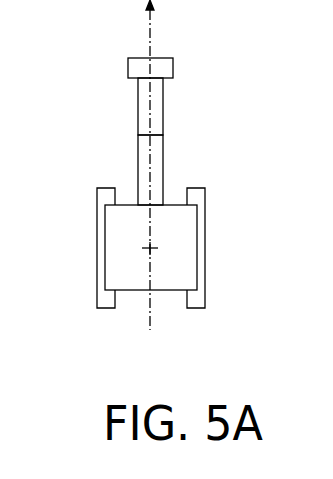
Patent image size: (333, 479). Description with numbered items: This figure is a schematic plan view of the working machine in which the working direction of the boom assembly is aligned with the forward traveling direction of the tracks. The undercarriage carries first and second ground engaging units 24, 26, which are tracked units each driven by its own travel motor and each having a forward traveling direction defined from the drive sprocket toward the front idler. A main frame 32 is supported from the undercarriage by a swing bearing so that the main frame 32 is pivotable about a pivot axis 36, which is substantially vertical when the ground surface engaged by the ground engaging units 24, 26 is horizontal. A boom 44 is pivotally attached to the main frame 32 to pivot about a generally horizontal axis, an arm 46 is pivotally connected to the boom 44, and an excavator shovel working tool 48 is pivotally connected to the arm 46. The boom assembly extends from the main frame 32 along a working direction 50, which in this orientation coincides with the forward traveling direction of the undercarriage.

The first ground engaging unit 24 is at (106, 308).
The second ground engaging unit 26 is at (192, 308).
The main frame 32 is at (182, 245).
The pivot axis 36 is at (152, 246).
The boom 44 is at (145, 163).
The arm 46 is at (145, 112).
The working tool 48 is at (135, 66).
The working direction 50 is at (150, 25).